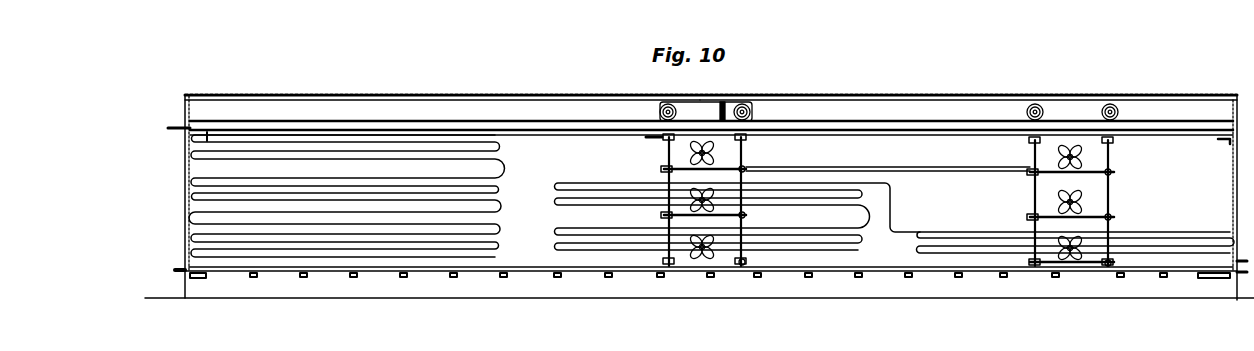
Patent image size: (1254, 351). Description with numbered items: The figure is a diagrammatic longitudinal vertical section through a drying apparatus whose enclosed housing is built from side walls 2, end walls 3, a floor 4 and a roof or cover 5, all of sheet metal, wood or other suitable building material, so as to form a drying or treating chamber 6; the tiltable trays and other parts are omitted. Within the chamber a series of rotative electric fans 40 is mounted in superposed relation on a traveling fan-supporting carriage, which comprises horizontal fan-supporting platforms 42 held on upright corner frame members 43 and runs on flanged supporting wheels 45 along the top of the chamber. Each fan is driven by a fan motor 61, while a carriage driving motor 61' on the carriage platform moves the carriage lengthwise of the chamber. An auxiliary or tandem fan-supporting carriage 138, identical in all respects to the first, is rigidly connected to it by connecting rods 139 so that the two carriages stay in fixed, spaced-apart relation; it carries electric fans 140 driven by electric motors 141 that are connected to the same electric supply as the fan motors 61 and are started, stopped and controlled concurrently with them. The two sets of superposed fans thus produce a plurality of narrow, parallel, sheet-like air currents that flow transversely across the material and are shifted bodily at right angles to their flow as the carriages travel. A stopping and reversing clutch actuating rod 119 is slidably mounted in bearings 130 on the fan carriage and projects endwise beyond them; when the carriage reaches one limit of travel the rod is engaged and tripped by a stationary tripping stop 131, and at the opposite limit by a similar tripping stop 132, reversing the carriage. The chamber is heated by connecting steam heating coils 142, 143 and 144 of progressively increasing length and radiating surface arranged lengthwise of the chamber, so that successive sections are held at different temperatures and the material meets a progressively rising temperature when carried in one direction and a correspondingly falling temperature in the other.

The side walls 2 is at (548, 113).
The end walls 3 is at (185, 100).
The floor 4 is at (543, 277).
The roof or cover 5 is at (407, 94).
The drying or treating chamber 6 is at (843, 112).
The rotative electric fans 40 is at (695, 167).
The horizontal fan-supporting platforms 42 is at (746, 216).
The upright corner frame members 43 is at (662, 215).
The flanged supporting wheels 45 is at (889, 112).
The fan motors 61 is at (912, 232).
The carriage driving motor 61' is at (745, 94).
The stopping and reversing clutch actuating rod 119 is at (515, 115).
The bearings 130 is at (664, 140).
The tripping stop 131 is at (195, 136).
The tripping stop 132 is at (1230, 144).
The auxiliary or tandem fan-supporting carriage 138 is at (1113, 206).
The connecting rods 139 is at (855, 172).
The electric fans 140 is at (1110, 149).
The electric motors 141 is at (745, 150).
The steam heating coil 142 is at (1152, 262).
The steam heating coil 143 is at (627, 172).
The steam heating coil 144 is at (503, 180).